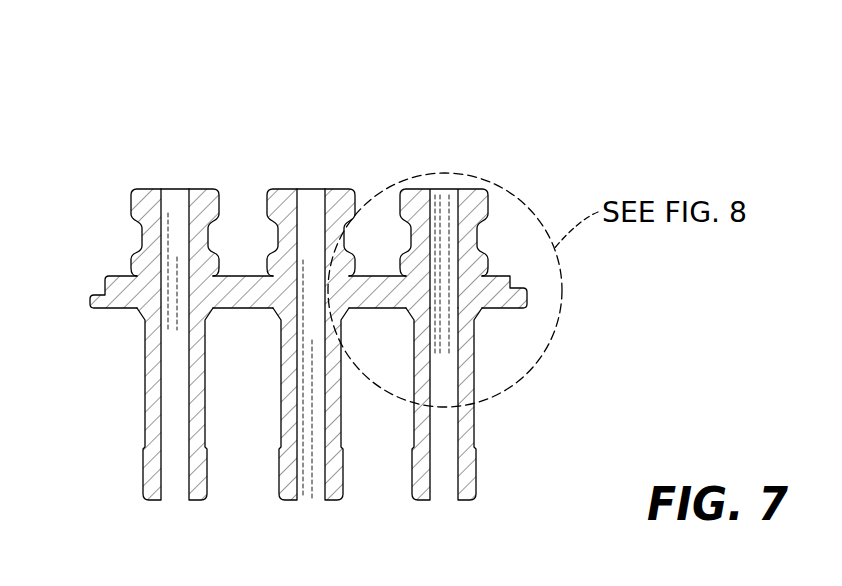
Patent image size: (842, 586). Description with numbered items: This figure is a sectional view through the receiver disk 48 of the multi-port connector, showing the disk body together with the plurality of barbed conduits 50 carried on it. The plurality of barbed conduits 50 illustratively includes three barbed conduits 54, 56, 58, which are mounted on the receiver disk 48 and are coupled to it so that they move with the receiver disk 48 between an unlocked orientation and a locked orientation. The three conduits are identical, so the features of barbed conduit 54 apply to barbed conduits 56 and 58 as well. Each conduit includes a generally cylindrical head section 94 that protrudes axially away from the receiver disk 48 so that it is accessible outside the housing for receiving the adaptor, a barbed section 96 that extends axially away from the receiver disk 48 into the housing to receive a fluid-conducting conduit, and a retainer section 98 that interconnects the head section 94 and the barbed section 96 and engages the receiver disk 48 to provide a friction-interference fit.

The plurality of barbed conduits 50 is at (319, 263).
The barbed conduit 58 is at (123, 183).
The barbed conduit 56 is at (273, 182).
The barbed conduit 54 is at (471, 291).
The head section 94 is at (495, 207).
The barbed section 96 is at (485, 370).
The receiver disk 48 is at (95, 288).
The retainer section 98 is at (487, 297).